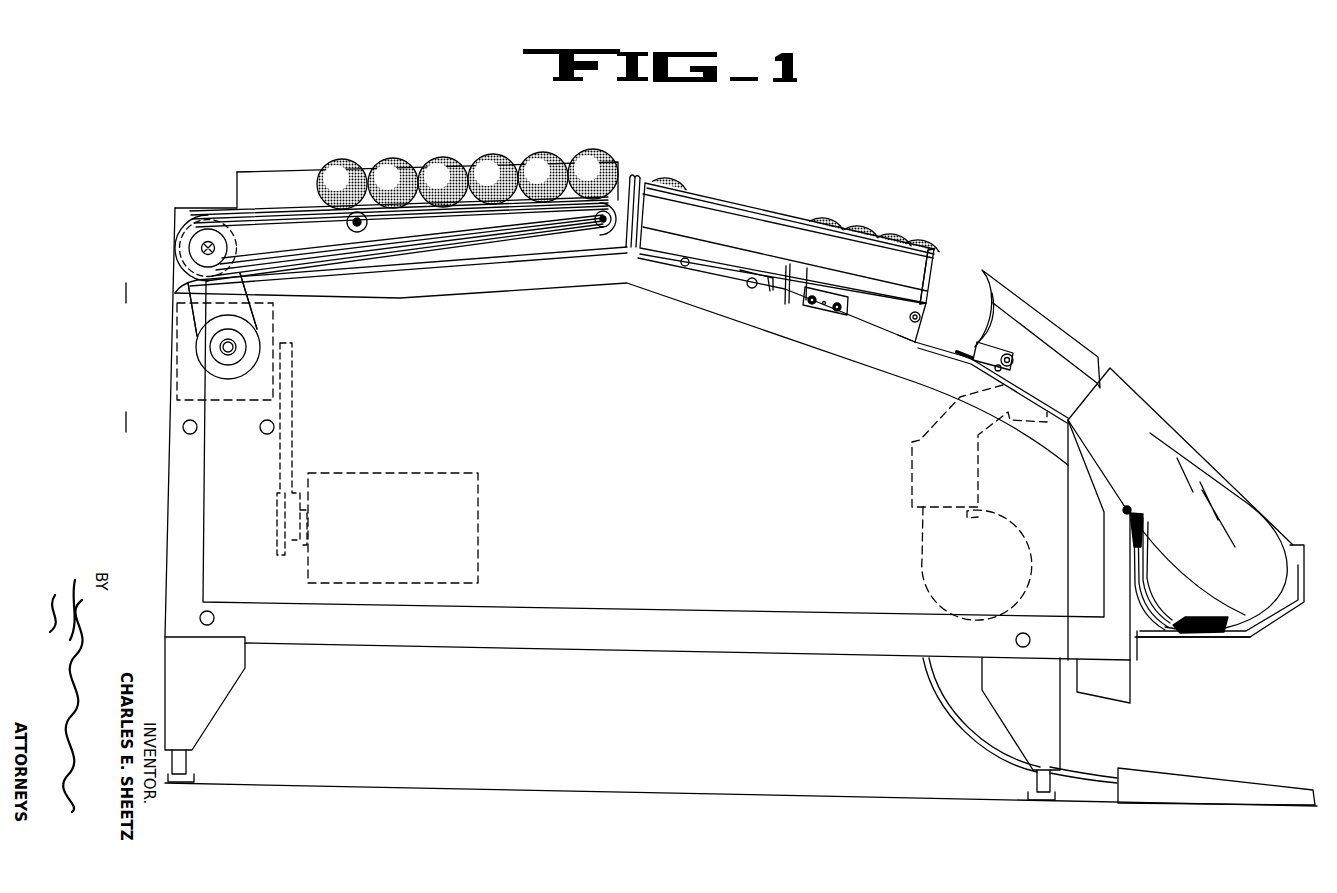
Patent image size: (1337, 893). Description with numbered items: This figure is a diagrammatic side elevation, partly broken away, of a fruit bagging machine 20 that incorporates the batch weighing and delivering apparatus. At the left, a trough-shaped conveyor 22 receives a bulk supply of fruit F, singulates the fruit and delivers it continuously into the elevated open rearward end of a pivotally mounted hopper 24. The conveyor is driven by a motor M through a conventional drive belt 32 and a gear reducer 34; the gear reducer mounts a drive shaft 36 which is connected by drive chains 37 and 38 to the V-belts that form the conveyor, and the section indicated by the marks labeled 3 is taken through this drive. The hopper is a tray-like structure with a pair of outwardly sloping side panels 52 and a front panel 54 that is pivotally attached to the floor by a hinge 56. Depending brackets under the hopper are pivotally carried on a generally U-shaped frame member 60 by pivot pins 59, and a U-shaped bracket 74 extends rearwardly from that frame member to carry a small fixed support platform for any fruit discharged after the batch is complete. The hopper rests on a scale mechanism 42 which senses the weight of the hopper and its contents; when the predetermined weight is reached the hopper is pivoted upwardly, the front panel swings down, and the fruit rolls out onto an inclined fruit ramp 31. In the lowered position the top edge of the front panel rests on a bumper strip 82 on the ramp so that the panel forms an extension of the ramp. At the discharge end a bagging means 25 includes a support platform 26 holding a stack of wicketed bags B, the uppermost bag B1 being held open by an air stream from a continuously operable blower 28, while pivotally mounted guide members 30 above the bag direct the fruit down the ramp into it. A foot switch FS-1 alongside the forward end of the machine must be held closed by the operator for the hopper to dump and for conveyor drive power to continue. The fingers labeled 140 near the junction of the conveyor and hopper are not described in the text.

The fruit bagging machine 20 is at (1003, 205).
The trough-shaped conveyor 22 is at (267, 203).
The hopper 24 is at (732, 212).
The bagging means 25 is at (1142, 372).
The support platform 26 is at (1265, 628).
The blower 28 is at (913, 442).
The guide members 30 is at (1007, 300).
The fruit ramp 31 is at (1023, 383).
The drive belt 32 is at (293, 427).
The gear reducer 34 is at (173, 375).
The drive shaft 36 is at (220, 349).
The drive chain 37 is at (247, 333).
The drive chain 38 is at (253, 305).
The scale mechanism 42 is at (899, 333).
The side panels 52 is at (772, 227).
The front panel 54 is at (936, 250).
The hinge 56 is at (928, 302).
The pivot pins 59 is at (823, 308).
The U-shaped frame member 60 is at (880, 320).
The U-shaped bracket 74 is at (679, 242).
The bumper strip 82 is at (967, 350).
The stop fingers 140 is at (626, 238).
The fruit F is at (490, 157).
The motor M is at (437, 475).
The wicketed bags B is at (1167, 630).
The uppermost bag B1 is at (1175, 430).
The foot switch FS-1 is at (1203, 783).
The section line 3- 3 is at (118, 422).